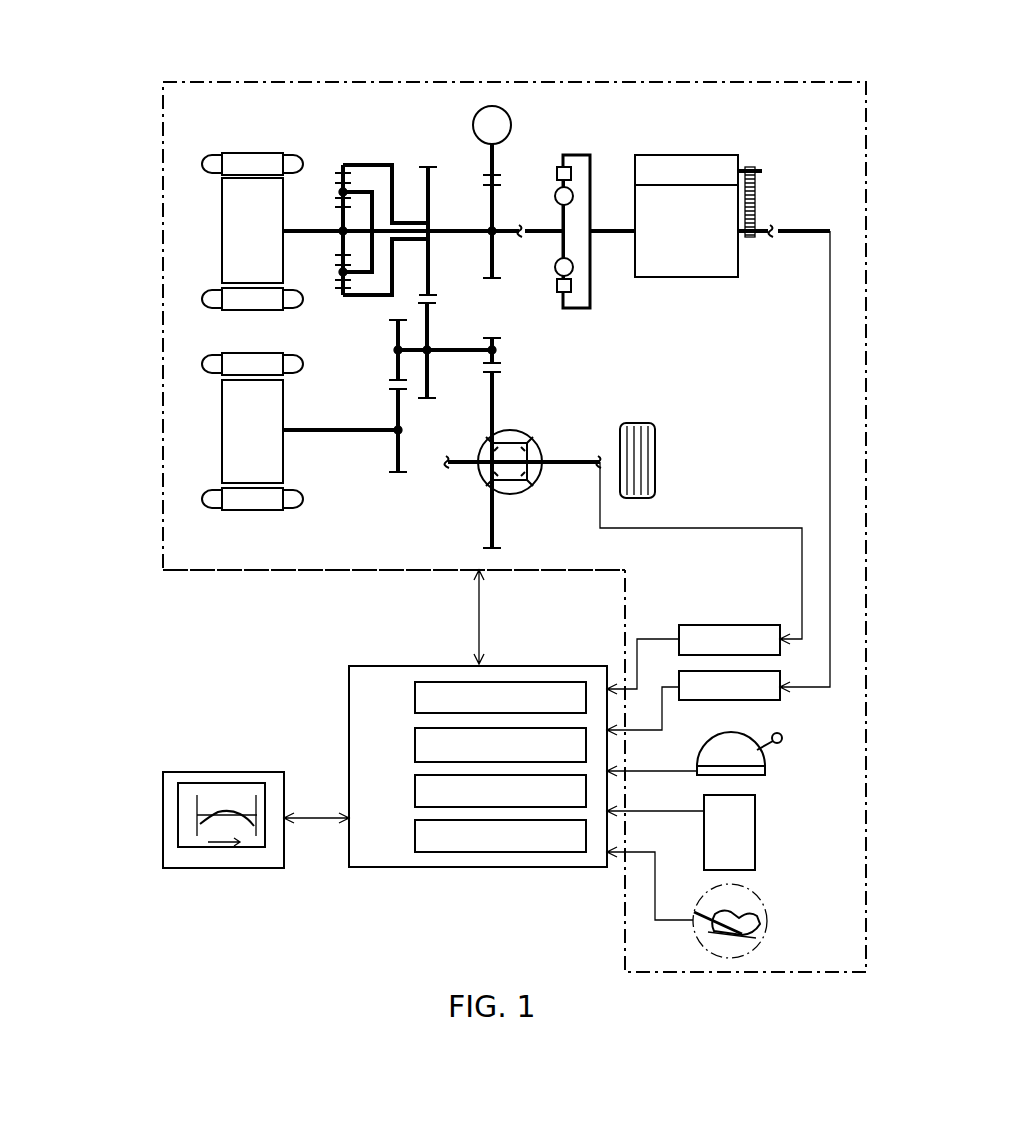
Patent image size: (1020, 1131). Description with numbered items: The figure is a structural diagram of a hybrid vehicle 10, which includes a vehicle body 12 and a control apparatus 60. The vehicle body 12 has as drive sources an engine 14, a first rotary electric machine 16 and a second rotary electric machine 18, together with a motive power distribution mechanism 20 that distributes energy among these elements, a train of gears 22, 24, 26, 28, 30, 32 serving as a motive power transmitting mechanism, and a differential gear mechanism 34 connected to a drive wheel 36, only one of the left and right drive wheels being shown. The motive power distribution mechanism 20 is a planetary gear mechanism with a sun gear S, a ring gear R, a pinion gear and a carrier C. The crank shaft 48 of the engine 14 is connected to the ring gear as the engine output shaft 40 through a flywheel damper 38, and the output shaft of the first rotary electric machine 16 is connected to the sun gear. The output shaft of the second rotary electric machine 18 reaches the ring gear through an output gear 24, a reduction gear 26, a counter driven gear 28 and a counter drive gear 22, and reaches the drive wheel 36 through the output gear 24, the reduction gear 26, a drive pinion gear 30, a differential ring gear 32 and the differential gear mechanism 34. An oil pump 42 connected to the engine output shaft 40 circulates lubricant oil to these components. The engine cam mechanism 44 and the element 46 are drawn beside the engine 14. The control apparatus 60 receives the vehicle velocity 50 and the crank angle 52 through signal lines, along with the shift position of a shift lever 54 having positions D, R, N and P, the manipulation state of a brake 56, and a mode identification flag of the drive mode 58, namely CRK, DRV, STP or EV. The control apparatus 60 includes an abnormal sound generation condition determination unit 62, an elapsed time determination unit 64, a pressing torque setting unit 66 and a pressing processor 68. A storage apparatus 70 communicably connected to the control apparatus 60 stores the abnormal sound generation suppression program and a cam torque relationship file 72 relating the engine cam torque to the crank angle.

The hybrid vehicle 10 is at (783, 51).
The vehicle body 12 is at (238, 573).
The engine 14 is at (688, 277).
The first rotary electric machine 16 is at (262, 142).
The second rotary electric machine 18 is at (262, 517).
The motive power distribution mechanism 20 is at (371, 148).
The counter drive gear 22 is at (437, 202).
The output gear 24 is at (389, 455).
The reduction gear 26 is at (389, 341).
The counter driven gear 28 is at (437, 314).
The drive pinion gear 30 is at (504, 337).
The differential ring gear 32 is at (504, 400).
The differential gear mechanism 34 is at (517, 493).
The drive wheel 36 is at (638, 423).
The flywheel damper 38 is at (601, 311).
The engine output shaft 40 is at (523, 241).
The oil pump 42 is at (512, 125).
The engine cam 44 is at (688, 155).
The crank angle sensor rotor 46 is at (755, 192).
The crank shaft 48 is at (775, 241).
The vehicle velocity 50 is at (681, 628).
The crank angle 52 is at (784, 698).
The shift lever 54 is at (784, 769).
The brake 56 is at (764, 888).
The drive mode 58 is at (758, 831).
The control apparatus 60 is at (349, 682).
The abnormal sound generation condition determination unit 62 is at (415, 703).
The elapsed time determination unit 64 is at (415, 749).
The pressing torque setting unit 66 is at (415, 796).
The pressing processor 68 is at (415, 841).
The storage apparatus 70 is at (202, 772).
The cam torque relationship file 72 is at (243, 772).